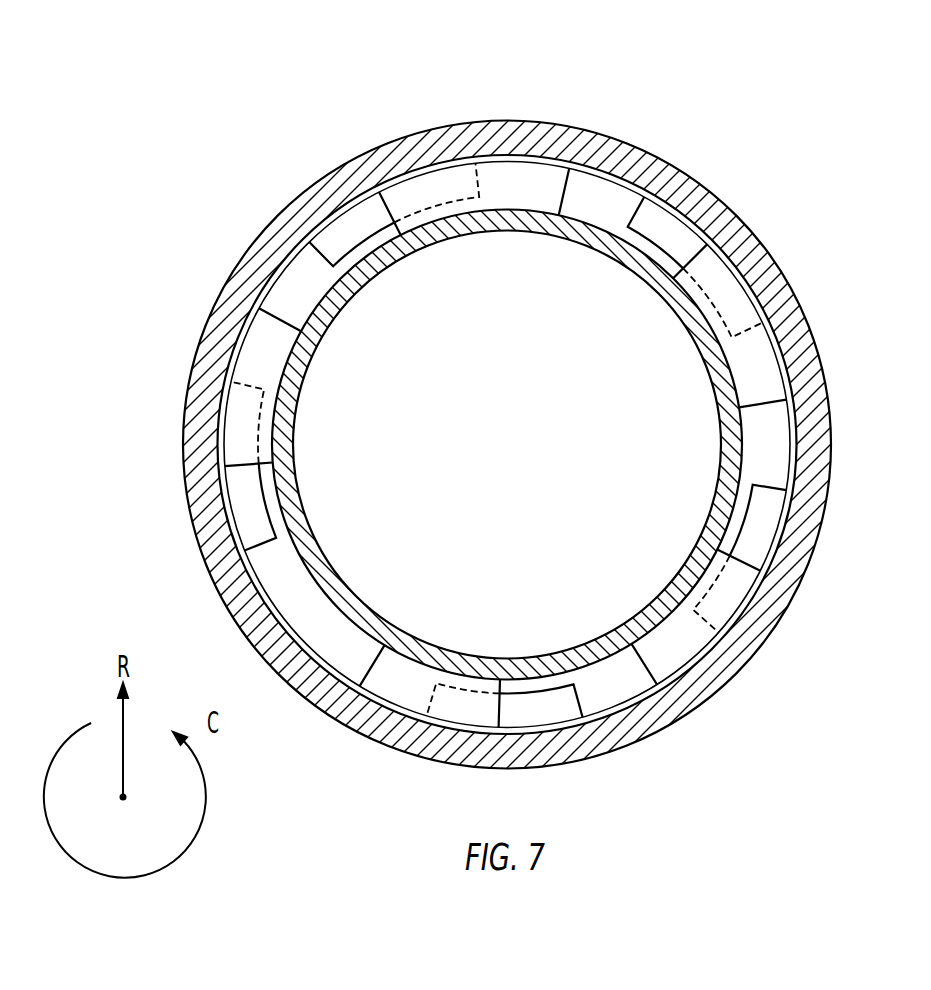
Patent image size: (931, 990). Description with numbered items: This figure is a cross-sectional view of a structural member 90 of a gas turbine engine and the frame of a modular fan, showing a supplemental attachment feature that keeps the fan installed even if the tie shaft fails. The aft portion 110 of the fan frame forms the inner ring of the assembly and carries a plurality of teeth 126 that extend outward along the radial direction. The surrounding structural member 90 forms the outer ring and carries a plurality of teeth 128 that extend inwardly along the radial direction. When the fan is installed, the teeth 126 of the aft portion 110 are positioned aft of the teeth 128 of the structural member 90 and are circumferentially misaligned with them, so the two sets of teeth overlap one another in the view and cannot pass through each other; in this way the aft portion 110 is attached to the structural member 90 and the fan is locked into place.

The structural member 90 is at (580, 137).
The aft portion of the frame 110 is at (640, 195).
The teeth of the aft portion 126 is at (520, 190).
The teeth of the structural member 128 is at (350, 222).